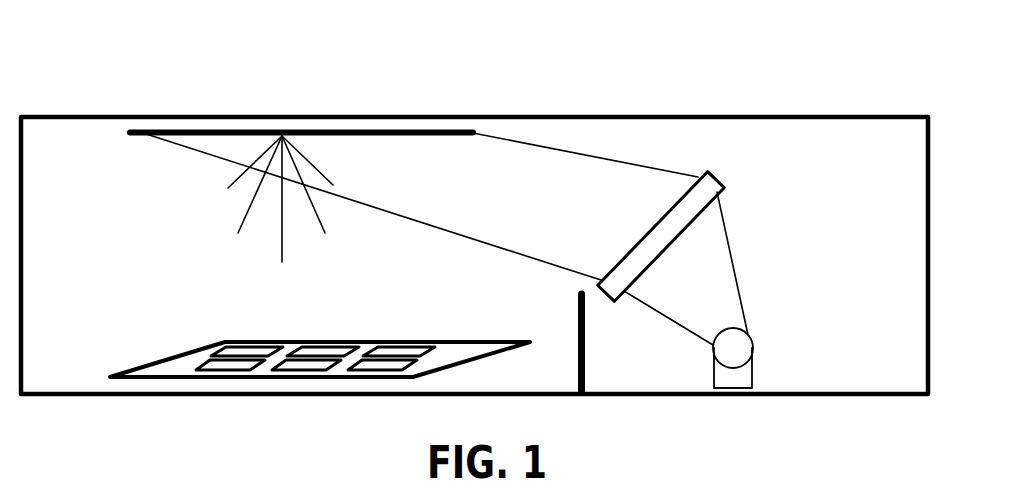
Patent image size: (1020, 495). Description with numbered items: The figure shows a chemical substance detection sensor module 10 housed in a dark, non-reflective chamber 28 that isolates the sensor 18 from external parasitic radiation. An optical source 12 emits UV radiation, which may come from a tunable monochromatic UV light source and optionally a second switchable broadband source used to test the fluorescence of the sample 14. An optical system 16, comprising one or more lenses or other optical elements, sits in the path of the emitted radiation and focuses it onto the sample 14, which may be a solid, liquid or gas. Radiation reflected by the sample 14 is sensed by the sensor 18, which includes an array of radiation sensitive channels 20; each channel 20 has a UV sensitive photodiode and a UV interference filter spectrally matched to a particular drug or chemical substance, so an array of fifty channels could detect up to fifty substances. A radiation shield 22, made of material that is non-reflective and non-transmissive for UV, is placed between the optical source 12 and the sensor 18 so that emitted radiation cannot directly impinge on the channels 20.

The chemical substance detection sensor module 10 is at (644, 88).
The optical source 12 is at (738, 350).
The sample 14 is at (363, 135).
The optical system 16 is at (697, 217).
The sensor 18 is at (165, 357).
The radiation sensitive channels 20 is at (245, 352).
The radiation shield 22 is at (587, 366).
The chamber 28 is at (803, 114).